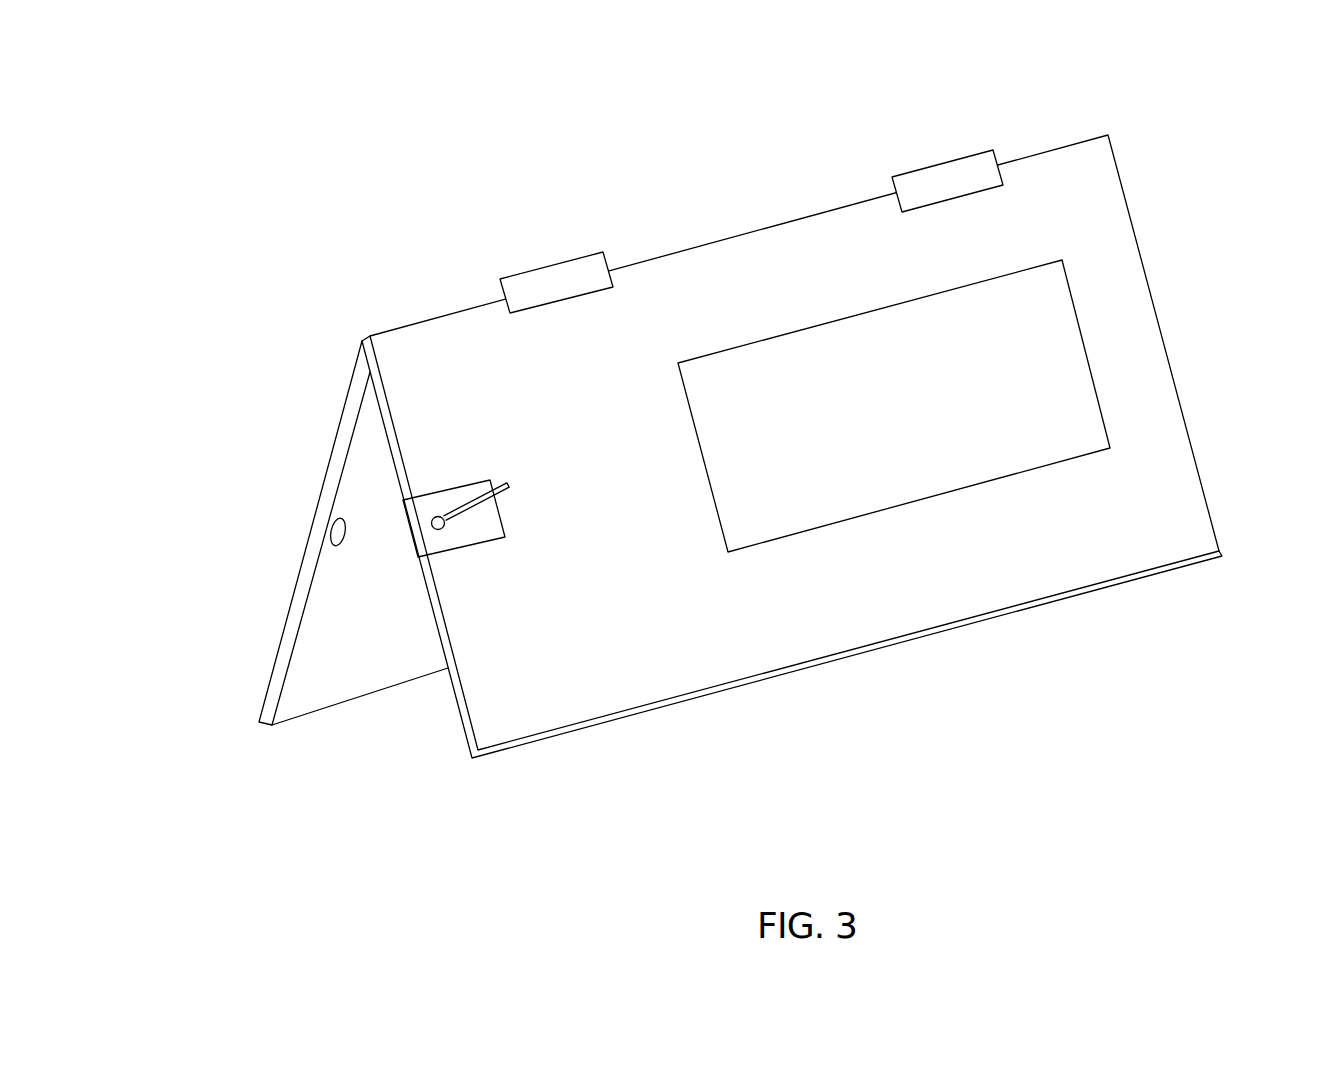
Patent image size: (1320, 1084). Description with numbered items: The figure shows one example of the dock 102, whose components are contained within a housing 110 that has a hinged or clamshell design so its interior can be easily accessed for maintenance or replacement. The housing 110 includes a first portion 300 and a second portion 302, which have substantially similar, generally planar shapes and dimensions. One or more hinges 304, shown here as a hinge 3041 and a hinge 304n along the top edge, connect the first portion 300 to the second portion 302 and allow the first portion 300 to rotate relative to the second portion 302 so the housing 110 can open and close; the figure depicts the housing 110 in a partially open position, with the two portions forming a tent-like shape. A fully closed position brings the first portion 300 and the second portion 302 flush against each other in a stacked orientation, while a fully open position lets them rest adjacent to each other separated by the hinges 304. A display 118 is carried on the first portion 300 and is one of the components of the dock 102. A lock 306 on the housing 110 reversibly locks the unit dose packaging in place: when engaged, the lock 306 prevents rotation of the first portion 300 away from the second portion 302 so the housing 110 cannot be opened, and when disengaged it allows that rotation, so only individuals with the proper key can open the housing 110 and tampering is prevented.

The dock 102 is at (188, 84).
The housing 110 is at (1190, 432).
The display 118 is at (1087, 352).
The first portion 300 is at (457, 377).
The second portion 302 is at (360, 673).
The hinge 304 is at (754, 212).
The hinge 3041 is at (552, 262).
The hinge 304n is at (940, 160).
The lock 306 is at (483, 530).